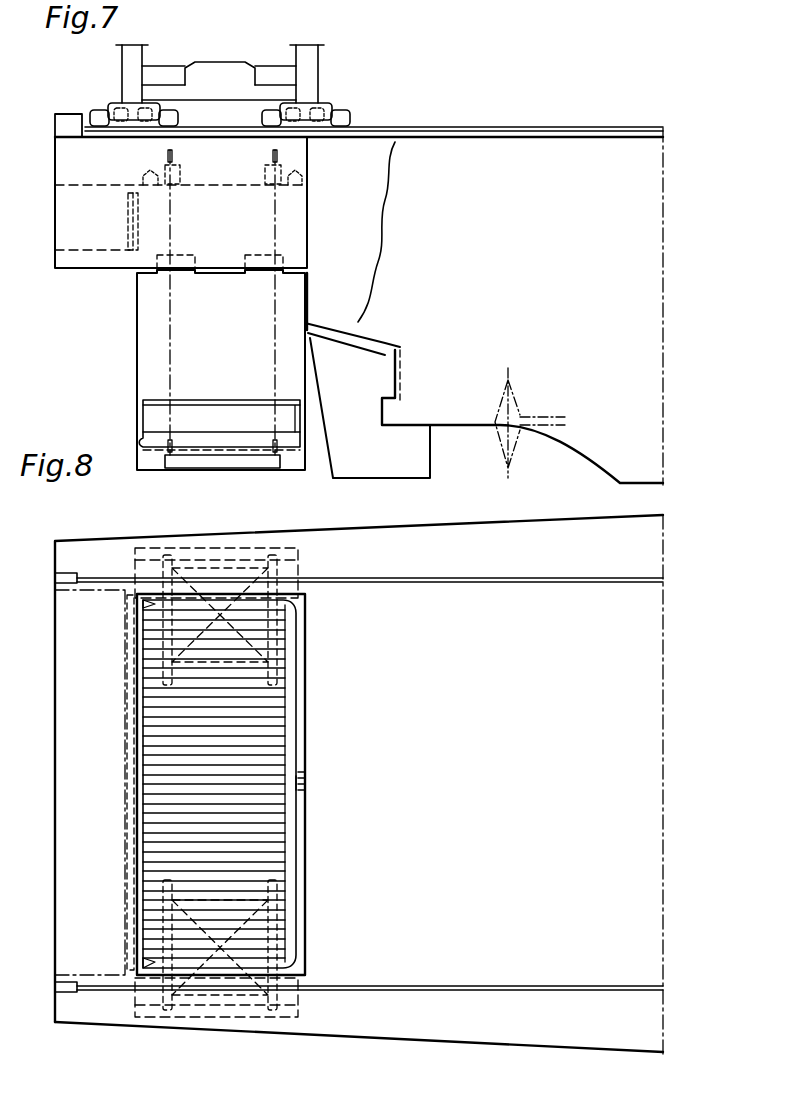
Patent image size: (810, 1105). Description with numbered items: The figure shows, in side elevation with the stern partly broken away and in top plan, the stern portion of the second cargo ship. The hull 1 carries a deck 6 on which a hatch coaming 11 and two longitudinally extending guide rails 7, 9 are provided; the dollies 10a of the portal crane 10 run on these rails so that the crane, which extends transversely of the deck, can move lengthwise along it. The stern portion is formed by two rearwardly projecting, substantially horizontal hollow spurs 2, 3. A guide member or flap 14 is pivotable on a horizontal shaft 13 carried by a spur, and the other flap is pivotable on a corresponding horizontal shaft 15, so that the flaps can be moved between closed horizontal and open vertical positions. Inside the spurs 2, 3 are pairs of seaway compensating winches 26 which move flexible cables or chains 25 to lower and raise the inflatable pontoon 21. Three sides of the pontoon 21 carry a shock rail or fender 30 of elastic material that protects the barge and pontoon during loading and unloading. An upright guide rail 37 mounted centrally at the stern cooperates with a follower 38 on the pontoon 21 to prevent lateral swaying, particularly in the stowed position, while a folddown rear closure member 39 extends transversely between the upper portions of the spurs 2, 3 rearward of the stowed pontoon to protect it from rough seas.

In FIG. 7, the hull 1 is at (484, 378).
In FIG. 8, the hull 1 is at (552, 1040).
In FIG. 7, the spur 2 is at (63, 160).
In FIG. 8, the spur 2 is at (82, 542).
In FIG. 8, the spur 3 is at (80, 1014).
In FIG. 7, the deck 6 is at (555, 139).
In FIG. 8, the deck 6 is at (510, 776).
In FIG. 8, the guide rail 7 is at (455, 578).
In FIG. 7, the guide rail 9 is at (531, 127).
In FIG. 8, the guide rail 9 is at (440, 988).
In FIG. 7, the portal crane 10 is at (214, 68).
In FIG. 7, the dollies 10a is at (262, 117).
In FIG. 8, the hatch coaming 11 is at (306, 840).
In FIG. 8, the horizontal shaft 13 is at (298, 556).
In FIG. 7, the guide member or flap 14 is at (135, 346).
In FIG. 8, the horizontal shaft 15 is at (201, 1012).
In FIG. 7, the pontoon 21 is at (206, 450).
In FIG. 8, the pontoon 21 is at (214, 784).
In FIG. 7, the cables or chains 25 is at (273, 340).
In FIG. 7, the seaway compensating winches 26 is at (146, 172).
In FIG. 7, the shock rail or fender 30 is at (217, 405).
In FIG. 8, the shock rail or fender 30 is at (148, 601).
In FIG. 8, the upright guide rail 37 is at (305, 784).
In FIG. 8, the follower 38 is at (305, 770).
In FIG. 7, the folddown rear closure member 39 is at (127, 212).